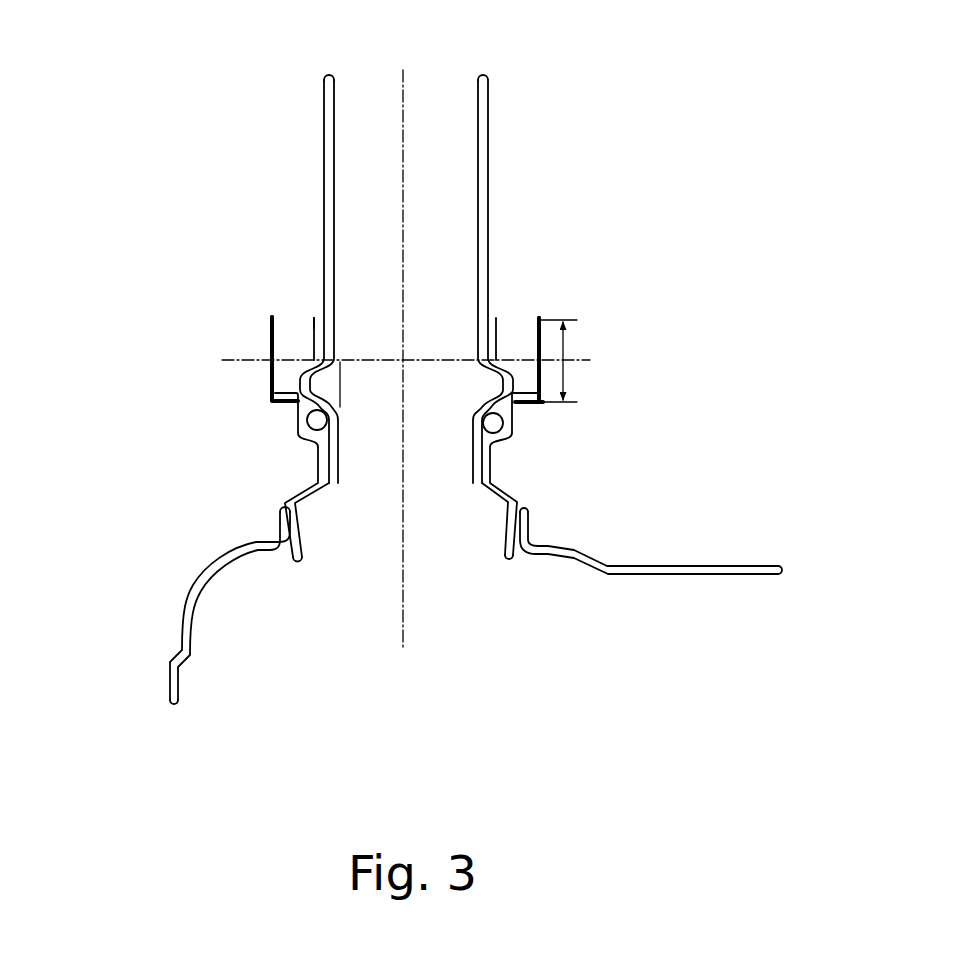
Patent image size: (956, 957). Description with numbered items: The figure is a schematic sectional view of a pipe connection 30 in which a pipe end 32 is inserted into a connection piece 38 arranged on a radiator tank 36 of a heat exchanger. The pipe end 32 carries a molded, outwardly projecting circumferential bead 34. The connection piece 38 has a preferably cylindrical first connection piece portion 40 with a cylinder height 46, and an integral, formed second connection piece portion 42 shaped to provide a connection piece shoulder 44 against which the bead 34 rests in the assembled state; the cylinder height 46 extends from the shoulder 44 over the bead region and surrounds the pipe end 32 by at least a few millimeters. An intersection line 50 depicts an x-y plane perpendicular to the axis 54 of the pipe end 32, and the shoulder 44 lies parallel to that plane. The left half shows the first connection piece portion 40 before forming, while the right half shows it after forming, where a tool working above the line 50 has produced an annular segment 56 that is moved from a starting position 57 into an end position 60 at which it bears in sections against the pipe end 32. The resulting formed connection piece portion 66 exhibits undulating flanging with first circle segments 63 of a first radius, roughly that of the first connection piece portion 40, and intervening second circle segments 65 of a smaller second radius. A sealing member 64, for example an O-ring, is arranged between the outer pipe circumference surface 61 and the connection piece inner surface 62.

The pipe connection 30 is at (160, 111).
The pipe end 32 is at (489, 159).
The bead 34 is at (539, 403).
The radiator tank 36 is at (193, 617).
The connection piece 38 is at (252, 437).
The first connection piece portion 40 is at (270, 318).
The second connection piece portion 42 is at (519, 437).
The connection piece shoulder 44 is at (290, 393).
The cylinder height 46 is at (502, 364).
The intersection line 50 is at (431, 358).
The axis 54 is at (405, 90).
The annular segment 56 is at (544, 300).
The starting position 57 is at (268, 307).
The end position 60 is at (313, 297).
The outer pipe circumference surface 61 is at (495, 202).
The connection piece inner surface 62 is at (531, 314).
The first circle segments 63 is at (547, 319).
The sealing member 64 is at (310, 421).
The second circle segments 65 is at (313, 327).
The formed connection piece portion 66 is at (574, 259).